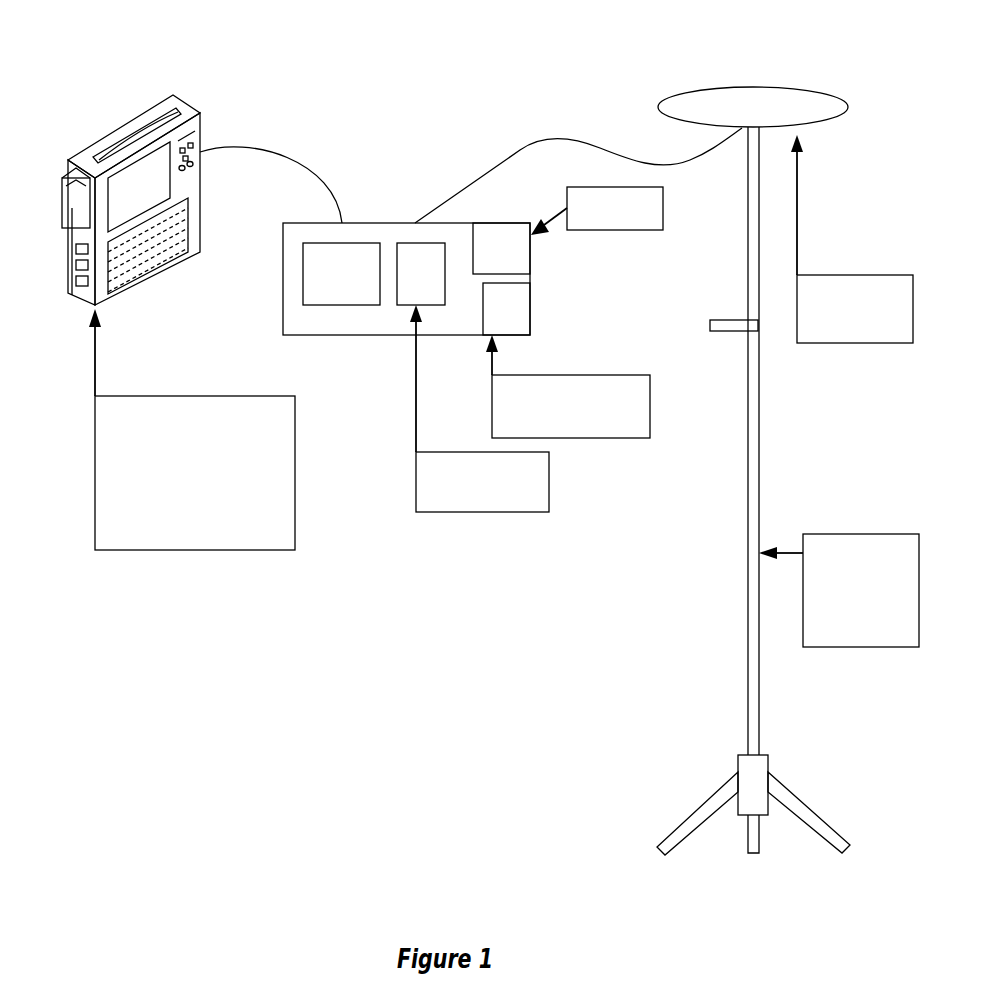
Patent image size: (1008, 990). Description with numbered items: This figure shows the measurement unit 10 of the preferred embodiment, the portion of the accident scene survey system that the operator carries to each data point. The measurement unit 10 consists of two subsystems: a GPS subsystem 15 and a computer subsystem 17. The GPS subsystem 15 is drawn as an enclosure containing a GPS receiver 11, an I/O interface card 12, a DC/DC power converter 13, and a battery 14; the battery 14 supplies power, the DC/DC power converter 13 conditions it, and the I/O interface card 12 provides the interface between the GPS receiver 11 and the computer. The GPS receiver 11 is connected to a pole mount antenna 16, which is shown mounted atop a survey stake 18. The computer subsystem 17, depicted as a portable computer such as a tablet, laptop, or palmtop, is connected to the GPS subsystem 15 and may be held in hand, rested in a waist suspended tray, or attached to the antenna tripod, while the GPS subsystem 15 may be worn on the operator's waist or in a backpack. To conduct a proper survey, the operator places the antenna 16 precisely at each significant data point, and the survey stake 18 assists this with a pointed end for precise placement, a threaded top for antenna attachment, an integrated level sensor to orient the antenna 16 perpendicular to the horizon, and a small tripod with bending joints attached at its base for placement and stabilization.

The measurement unit 10 is at (438, 46).
The GPS receiver 11 is at (341, 335).
The I/O interface card 12 is at (473, 512).
The DC/DC power converter 13 is at (605, 438).
The battery 14 is at (625, 230).
The GPS subsystem 15 is at (378, 223).
The pole mount antenna 16 is at (853, 343).
The computer subsystem 17 is at (131, 550).
The survey stake 18 is at (868, 647).